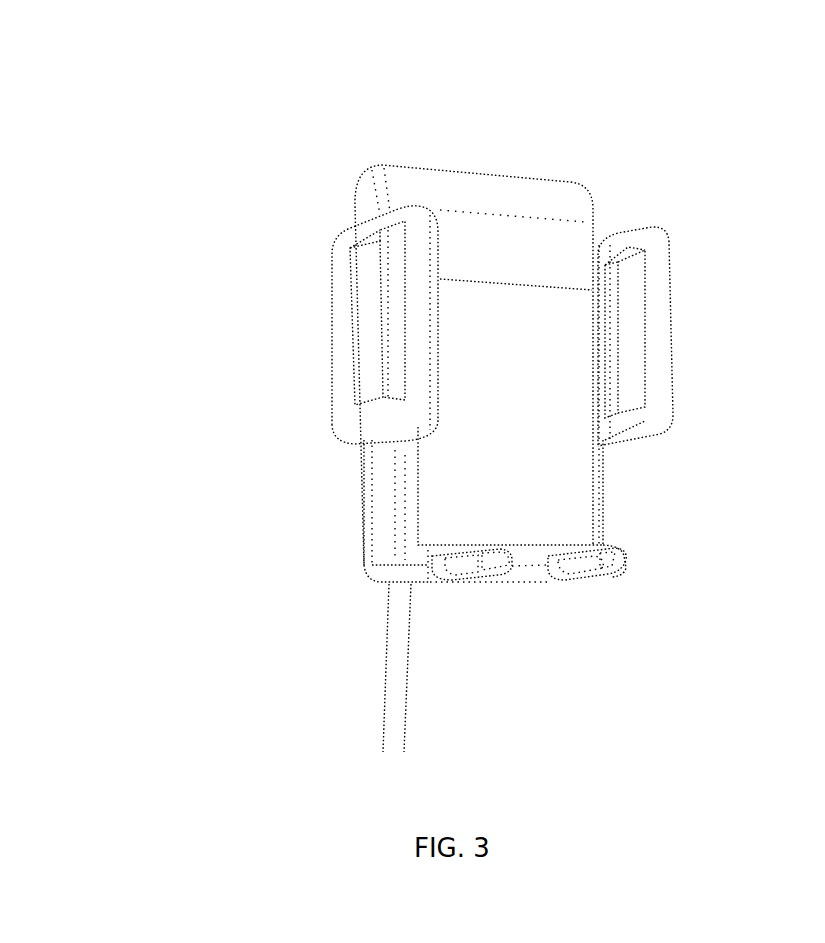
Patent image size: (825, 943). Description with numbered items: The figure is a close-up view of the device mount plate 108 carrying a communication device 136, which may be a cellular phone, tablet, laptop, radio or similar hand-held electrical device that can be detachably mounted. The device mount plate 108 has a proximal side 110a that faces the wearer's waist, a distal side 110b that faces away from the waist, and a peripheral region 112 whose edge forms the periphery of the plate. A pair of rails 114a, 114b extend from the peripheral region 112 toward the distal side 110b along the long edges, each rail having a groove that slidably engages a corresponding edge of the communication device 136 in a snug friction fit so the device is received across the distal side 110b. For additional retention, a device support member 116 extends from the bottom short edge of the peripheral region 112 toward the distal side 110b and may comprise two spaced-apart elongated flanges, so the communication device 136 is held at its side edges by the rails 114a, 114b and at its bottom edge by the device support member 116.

The device mount plate 108 is at (208, 237).
The communication device 136 is at (488, 158).
The rail 114a is at (385, 417).
The rail 114b is at (668, 315).
The proximal side 110a is at (358, 512).
The distal side 110b is at (538, 561).
The peripheral region 112 is at (432, 568).
The device support member 116 is at (614, 564).